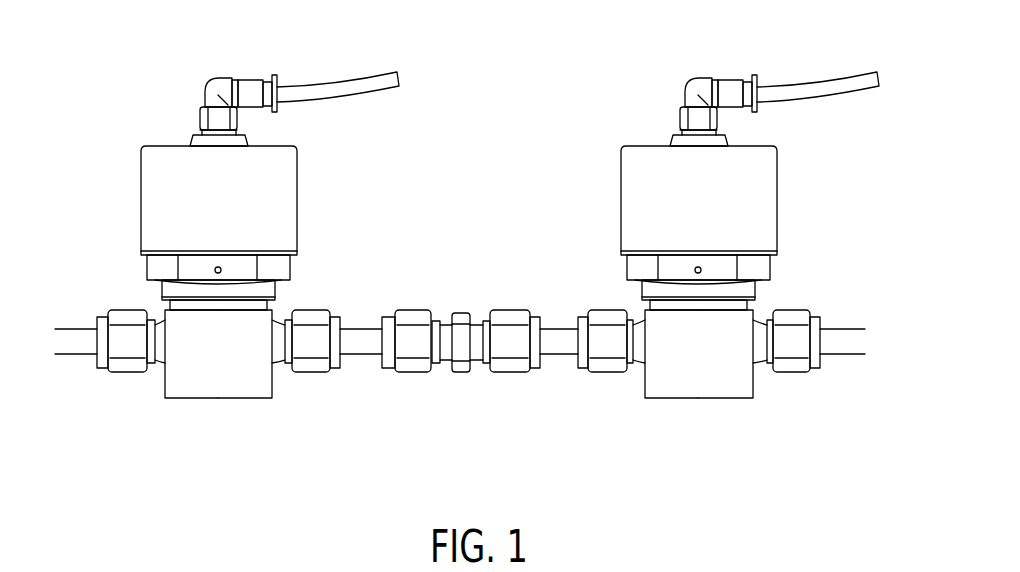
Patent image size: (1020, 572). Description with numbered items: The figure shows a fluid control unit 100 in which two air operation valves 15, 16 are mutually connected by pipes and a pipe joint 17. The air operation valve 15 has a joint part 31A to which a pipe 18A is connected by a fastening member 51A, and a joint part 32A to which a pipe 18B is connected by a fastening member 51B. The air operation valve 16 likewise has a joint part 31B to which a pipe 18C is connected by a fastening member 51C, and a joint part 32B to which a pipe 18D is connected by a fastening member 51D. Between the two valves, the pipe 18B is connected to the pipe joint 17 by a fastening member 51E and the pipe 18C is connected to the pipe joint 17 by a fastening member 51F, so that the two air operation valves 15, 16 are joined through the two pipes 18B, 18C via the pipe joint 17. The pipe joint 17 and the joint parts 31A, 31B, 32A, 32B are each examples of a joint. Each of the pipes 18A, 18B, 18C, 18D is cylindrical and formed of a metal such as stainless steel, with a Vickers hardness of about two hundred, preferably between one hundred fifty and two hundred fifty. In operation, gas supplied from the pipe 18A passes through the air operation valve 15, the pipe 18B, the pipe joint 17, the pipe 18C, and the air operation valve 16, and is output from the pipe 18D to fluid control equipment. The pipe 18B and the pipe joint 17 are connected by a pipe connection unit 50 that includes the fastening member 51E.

The fluid control unit 100 is at (117, 54).
The air operation valve 15 is at (290, 218).
The air operation valve 16 is at (628, 207).
The pipe joint 17 is at (460, 318).
The pipe 18A is at (73, 349).
The pipe 18B is at (362, 349).
The pipe 18C is at (562, 349).
The pipe 18D is at (843, 349).
The joint part 31A is at (153, 396).
The joint part 32A is at (281, 396).
The joint part 31B is at (643, 396).
The joint part 32B is at (761, 396).
The pipe connection unit 50 is at (467, 440).
The fastening member 51A is at (127, 370).
The fastening member 51B is at (311, 370).
The fastening member 51C is at (612, 370).
The fastening member 51D is at (797, 370).
The fastening member 51E is at (415, 370).
The fastening member 51F is at (510, 370).